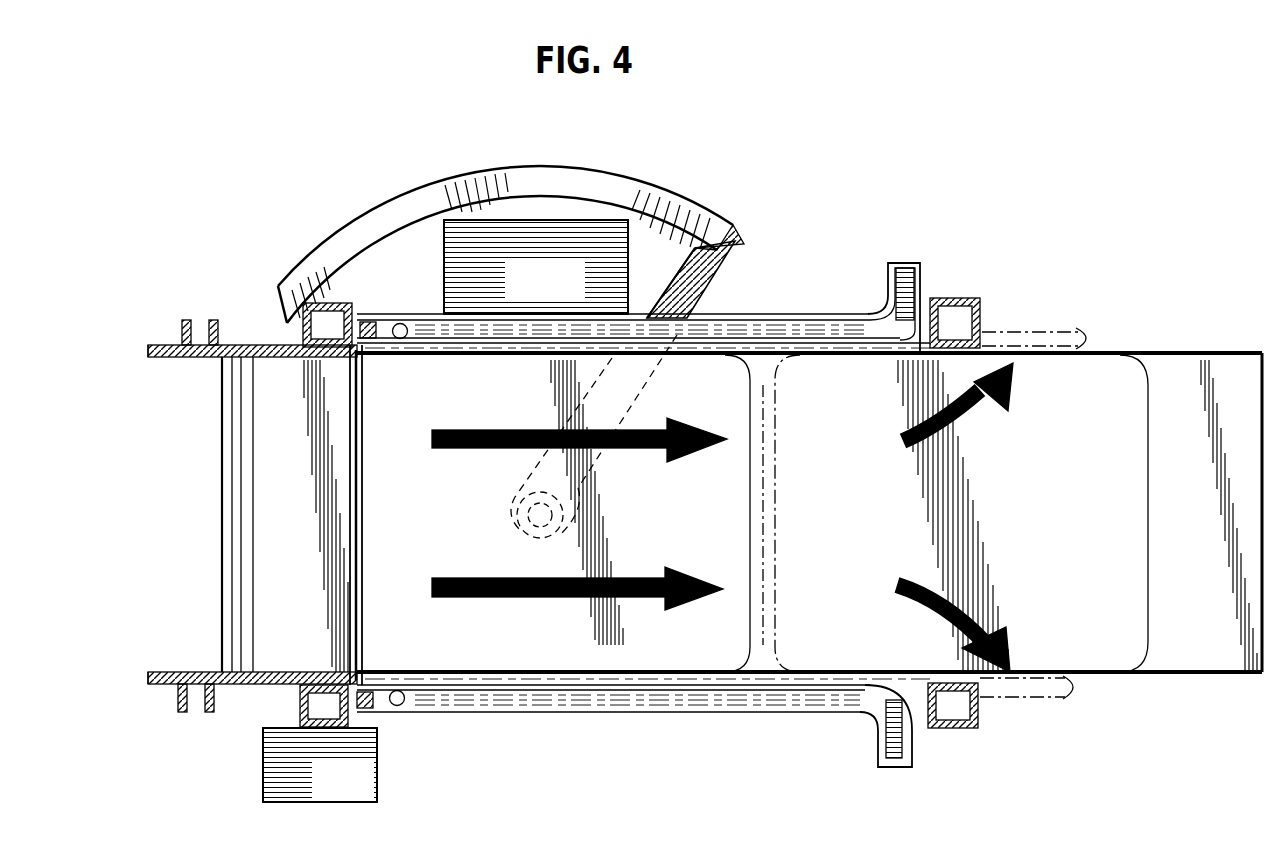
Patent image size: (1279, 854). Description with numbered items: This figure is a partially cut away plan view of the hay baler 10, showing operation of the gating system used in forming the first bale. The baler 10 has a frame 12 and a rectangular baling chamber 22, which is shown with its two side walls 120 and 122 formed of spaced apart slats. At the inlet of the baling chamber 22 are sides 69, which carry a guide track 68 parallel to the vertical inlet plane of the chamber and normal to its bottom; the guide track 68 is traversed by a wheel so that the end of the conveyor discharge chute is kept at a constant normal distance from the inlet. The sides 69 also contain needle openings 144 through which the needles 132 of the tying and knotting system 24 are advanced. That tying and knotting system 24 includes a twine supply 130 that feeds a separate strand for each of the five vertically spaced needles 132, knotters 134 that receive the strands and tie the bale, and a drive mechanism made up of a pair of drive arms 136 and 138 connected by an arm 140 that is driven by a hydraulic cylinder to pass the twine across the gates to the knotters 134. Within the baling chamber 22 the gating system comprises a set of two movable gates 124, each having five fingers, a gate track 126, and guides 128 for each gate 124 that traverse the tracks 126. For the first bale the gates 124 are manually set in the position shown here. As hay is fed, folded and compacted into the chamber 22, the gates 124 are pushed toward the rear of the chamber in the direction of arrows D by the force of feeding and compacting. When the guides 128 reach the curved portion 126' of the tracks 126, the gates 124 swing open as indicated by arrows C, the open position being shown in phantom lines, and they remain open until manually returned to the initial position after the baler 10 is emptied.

The baler 10 is at (800, 150).
The frame 12 is at (333, 303).
The baling chamber 22 is at (200, 495).
The tying and knotting system 24 is at (560, 376).
The guide track 68 is at (190, 322).
The sides 69 is at (175, 358).
The side wall 120 is at (816, 362).
The side wall 122 is at (832, 665).
The movable gates 124 is at (357, 545).
The gate track 126 is at (643, 540).
The curved portion 126' is at (928, 506).
The guides 128 is at (402, 324).
The twine supply 130 is at (575, 298).
The needles 132 is at (370, 210).
The knotters 134 is at (368, 794).
The drive arm 136 is at (724, 290).
The drive arm 138 is at (517, 520).
The arm 140 is at (745, 235).
The needle openings 144 is at (247, 345).
The arrows C is at (985, 422).
The arrows D is at (676, 568).